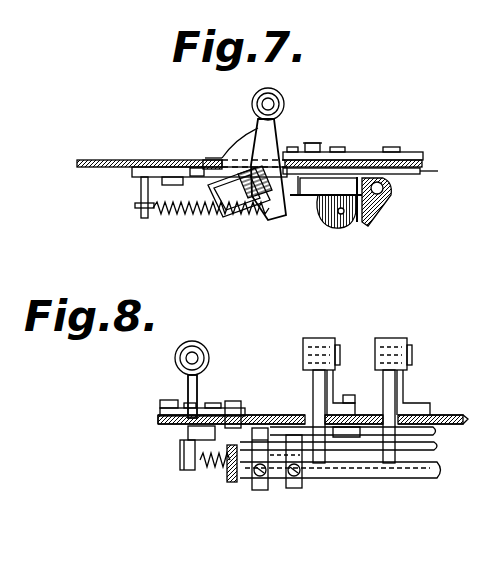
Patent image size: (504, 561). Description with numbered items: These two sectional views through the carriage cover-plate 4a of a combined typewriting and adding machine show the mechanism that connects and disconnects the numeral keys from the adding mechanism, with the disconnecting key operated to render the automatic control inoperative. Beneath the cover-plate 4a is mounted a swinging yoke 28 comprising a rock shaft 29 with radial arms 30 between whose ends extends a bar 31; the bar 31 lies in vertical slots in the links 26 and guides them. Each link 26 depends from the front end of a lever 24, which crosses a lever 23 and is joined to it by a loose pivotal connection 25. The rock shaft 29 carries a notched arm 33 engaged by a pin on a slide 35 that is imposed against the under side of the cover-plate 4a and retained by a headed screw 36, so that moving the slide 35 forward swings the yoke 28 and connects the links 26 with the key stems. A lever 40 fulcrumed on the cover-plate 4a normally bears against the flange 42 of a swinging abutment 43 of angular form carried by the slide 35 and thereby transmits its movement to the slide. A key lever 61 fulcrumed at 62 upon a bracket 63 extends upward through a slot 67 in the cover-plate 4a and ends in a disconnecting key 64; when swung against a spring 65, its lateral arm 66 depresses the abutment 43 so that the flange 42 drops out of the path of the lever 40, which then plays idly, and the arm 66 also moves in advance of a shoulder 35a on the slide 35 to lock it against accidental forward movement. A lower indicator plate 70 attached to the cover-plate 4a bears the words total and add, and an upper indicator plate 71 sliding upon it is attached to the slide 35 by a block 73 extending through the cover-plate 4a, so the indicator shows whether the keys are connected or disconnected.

In FIG. 7, the cover-plate 4a is at (105, 160).
In FIG. 8, the cover-plate 4a is at (294, 415).
In FIG. 8, the lever 23 is at (327, 380).
In FIG. 8, the lever 24 is at (320, 340).
In FIG. 8, the loose pivotal connection 25 is at (306, 355).
In FIG. 8, the link 26 is at (360, 398).
In FIG. 8, the swinging yoke 28 is at (340, 483).
In FIG. 7, the rock shaft 29 is at (343, 213).
In FIG. 8, the rock shaft 29 is at (348, 472).
In FIG. 7, the radial arms 30 is at (360, 206).
In FIG. 8, the radial arms 30 is at (295, 489).
In FIG. 7, the bar 31 is at (385, 188).
In FIG. 8, the bar 31 is at (441, 448).
In FIG. 8, the notched arm 33 is at (258, 491).
In FIG. 7, the slide 35 is at (137, 172).
In FIG. 7, the lateral extension or shoulder 35a is at (180, 162).
In FIG. 7, the headed screw 36 is at (162, 182).
In FIG. 8, the lever 40 is at (440, 432).
In FIG. 7, the flange 42 is at (208, 200).
In FIG. 7, the swinging abutment 43 is at (240, 204).
In FIG. 7, the key lever 61 is at (275, 138).
In FIG. 8, the key lever 61 is at (198, 390).
In FIG. 7, the fulcrum 62 is at (298, 186).
In FIG. 8, the fulcrum 62 is at (185, 452).
In FIG. 7, the bracket 63 is at (372, 197).
In FIG. 8, the bracket 63 is at (190, 432).
In FIG. 7, the disconnecting key 64 is at (284, 103).
In FIG. 8, the disconnecting key 64 is at (200, 348).
In FIG. 7, the spring 65 is at (178, 214).
In FIG. 8, the spring 65 is at (205, 468).
In FIG. 7, the arm 66 is at (236, 153).
In FIG. 7, the slot 67 is at (205, 166).
In FIG. 7, the lower indicator plate 70 is at (373, 153).
In FIG. 8, the lower indicator plate 70 is at (165, 410).
In FIG. 7, the upper indicator plate 71 is at (348, 152).
In FIG. 8, the upper indicator plate 71 is at (216, 408).
In FIG. 7, the block 73 is at (424, 171).
In FIG. 8, the block 73 is at (245, 420).